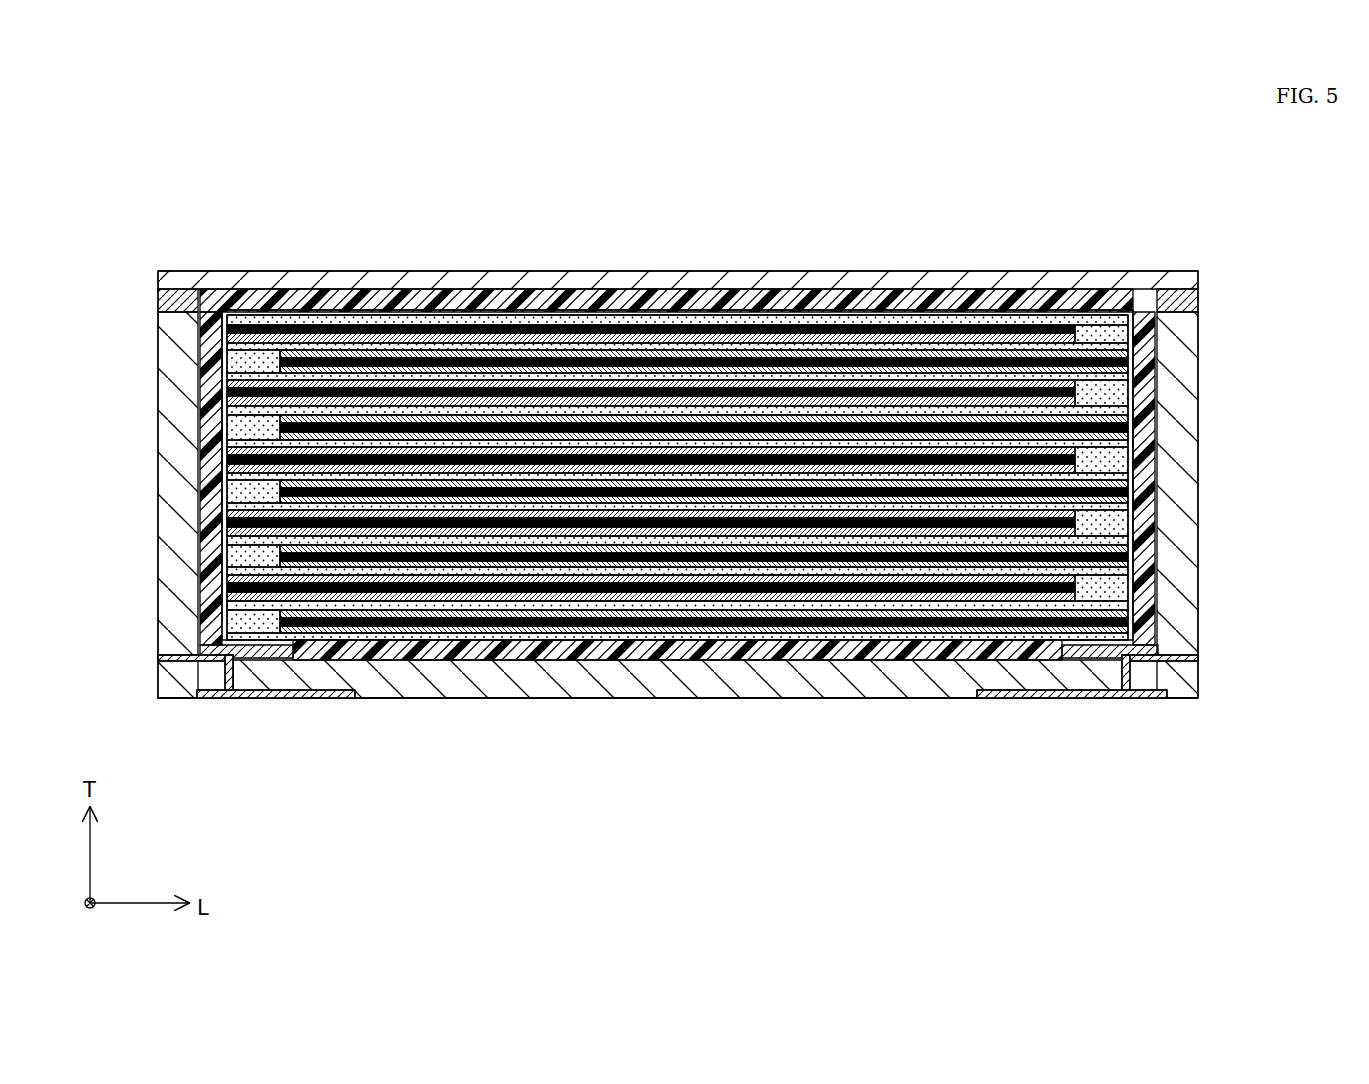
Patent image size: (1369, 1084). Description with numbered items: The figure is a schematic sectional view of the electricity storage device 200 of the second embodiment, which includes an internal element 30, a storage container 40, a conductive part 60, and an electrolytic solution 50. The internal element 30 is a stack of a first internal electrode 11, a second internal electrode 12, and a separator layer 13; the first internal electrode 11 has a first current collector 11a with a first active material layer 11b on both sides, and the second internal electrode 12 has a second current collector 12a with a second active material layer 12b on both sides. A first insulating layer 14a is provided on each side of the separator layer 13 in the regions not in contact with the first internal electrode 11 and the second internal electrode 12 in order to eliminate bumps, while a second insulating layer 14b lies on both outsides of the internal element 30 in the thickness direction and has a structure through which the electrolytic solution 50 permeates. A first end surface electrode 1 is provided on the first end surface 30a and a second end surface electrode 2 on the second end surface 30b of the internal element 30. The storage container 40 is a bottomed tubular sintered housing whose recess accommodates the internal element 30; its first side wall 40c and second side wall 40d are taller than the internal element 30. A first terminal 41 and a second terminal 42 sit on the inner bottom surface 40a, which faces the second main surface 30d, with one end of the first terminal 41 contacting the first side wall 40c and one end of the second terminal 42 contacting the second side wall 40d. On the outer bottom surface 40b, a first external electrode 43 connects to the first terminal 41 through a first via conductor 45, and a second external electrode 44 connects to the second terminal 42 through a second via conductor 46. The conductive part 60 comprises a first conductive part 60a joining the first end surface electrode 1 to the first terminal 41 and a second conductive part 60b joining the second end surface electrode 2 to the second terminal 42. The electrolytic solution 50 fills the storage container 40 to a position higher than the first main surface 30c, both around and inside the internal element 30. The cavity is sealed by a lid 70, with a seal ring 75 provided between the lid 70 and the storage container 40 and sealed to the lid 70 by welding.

The electricity storage device 200 is at (292, 210).
The first end surface electrode 1 is at (248, 300).
The second end surface electrode 2 is at (1105, 300).
The lid 70 is at (572, 271).
The seal ring 75 is at (158, 298).
The internal element 30 is at (677, 492).
The first end surface 30a is at (222, 395).
The second end surface 30b is at (1133, 486).
The first main surface 30c is at (655, 310).
The second main surface 30d is at (528, 652).
The electrolytic solution 50 is at (975, 300).
The first internal electrode 11 is at (561, 463).
The first current collector 11a is at (227, 462).
The first active material layer 11b is at (227, 452).
The second internal electrode 12 is at (793, 491).
The second current collector 12a is at (1133, 428).
The second active material layer 12b is at (1133, 418).
The separator layer 13 is at (222, 488).
The first insulating layer 14a is at (228, 358).
The second insulating layer 14b is at (907, 322).
The storage container 40 is at (677, 578).
The inner bottom surface 40a is at (887, 670).
The outer bottom surface 40b is at (806, 698).
The first side wall 40c is at (158, 607).
The second side wall 40d is at (1198, 617).
The first terminal 41 is at (200, 660).
The second terminal 42 is at (1160, 657).
The first external electrode 43 is at (210, 698).
The second external electrode 44 is at (1170, 698).
The first via conductor 45 is at (226, 678).
The second via conductor 46 is at (1132, 685).
The conductive part 60 is at (603, 715).
The first conductive part 60a is at (210, 651).
The second conductive part 60b is at (1060, 652).